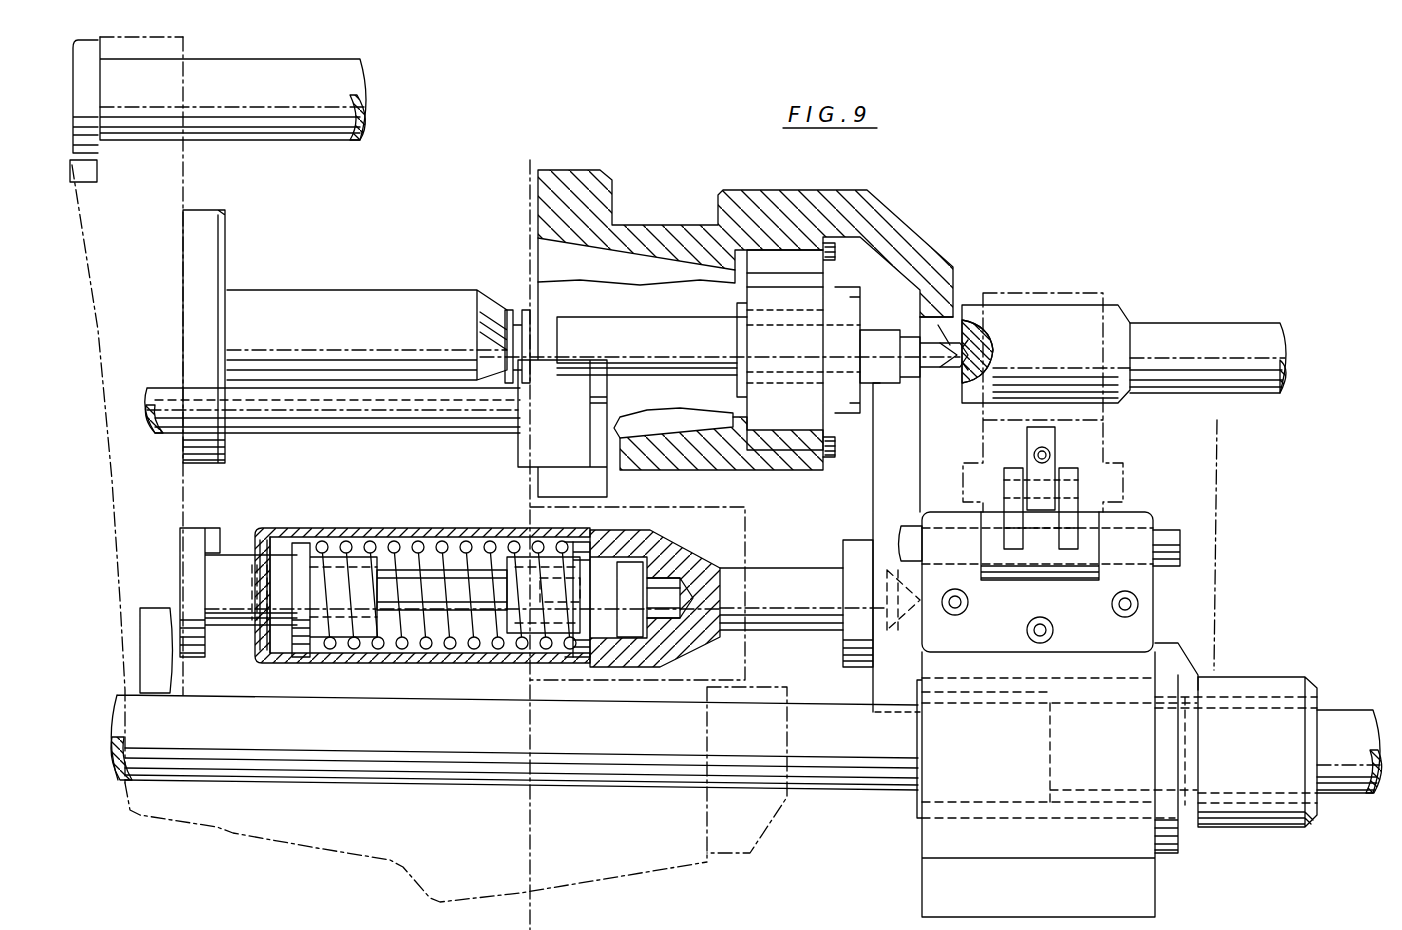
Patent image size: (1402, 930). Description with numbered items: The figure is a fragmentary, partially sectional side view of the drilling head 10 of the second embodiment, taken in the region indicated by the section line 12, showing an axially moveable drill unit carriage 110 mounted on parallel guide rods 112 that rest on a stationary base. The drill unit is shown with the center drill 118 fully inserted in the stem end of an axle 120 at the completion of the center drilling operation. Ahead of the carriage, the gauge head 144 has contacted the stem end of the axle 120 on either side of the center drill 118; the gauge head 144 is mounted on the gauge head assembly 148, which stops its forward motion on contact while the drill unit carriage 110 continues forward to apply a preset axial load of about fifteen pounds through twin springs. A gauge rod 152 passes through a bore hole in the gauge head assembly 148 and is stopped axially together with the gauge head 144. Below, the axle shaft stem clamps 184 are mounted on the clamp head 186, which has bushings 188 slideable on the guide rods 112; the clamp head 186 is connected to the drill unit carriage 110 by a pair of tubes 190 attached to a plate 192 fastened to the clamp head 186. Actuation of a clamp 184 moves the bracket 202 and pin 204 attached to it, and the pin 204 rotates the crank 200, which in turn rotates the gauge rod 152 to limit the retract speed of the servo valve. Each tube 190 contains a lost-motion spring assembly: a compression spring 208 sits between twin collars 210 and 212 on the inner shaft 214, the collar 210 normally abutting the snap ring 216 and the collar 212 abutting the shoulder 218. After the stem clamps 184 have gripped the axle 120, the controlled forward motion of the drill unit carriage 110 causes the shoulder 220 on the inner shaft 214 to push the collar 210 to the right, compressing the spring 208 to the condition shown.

The housing 10 is at (528, 181).
The section line 12 is at (1222, 427).
The drill unit carriage 110 is at (186, 193).
The guide rods 112 is at (514, 742).
The center drill 118 is at (946, 372).
The axle 120 is at (1082, 315).
The gauge head 144 is at (938, 325).
The gauge head assembly 148 is at (700, 455).
The gauge rod 152 is at (1168, 566).
The axle shaft stem clamps 184 is at (1098, 446).
The clamp head 186 is at (1137, 853).
The bushings 188 is at (1283, 690).
The tubes 190 is at (665, 555).
The plate 192 is at (873, 496).
The crank 200 is at (1067, 549).
The bracket 202 is at (1055, 470).
The pin 204 is at (1085, 495).
The compression spring 208 is at (455, 545).
The collar 210 is at (300, 657).
The collar 212 is at (580, 657).
The inner shaft 214 is at (478, 595).
The snap ring 216 is at (258, 651).
The shoulder 218 is at (585, 535).
The shoulder 220 is at (300, 543).